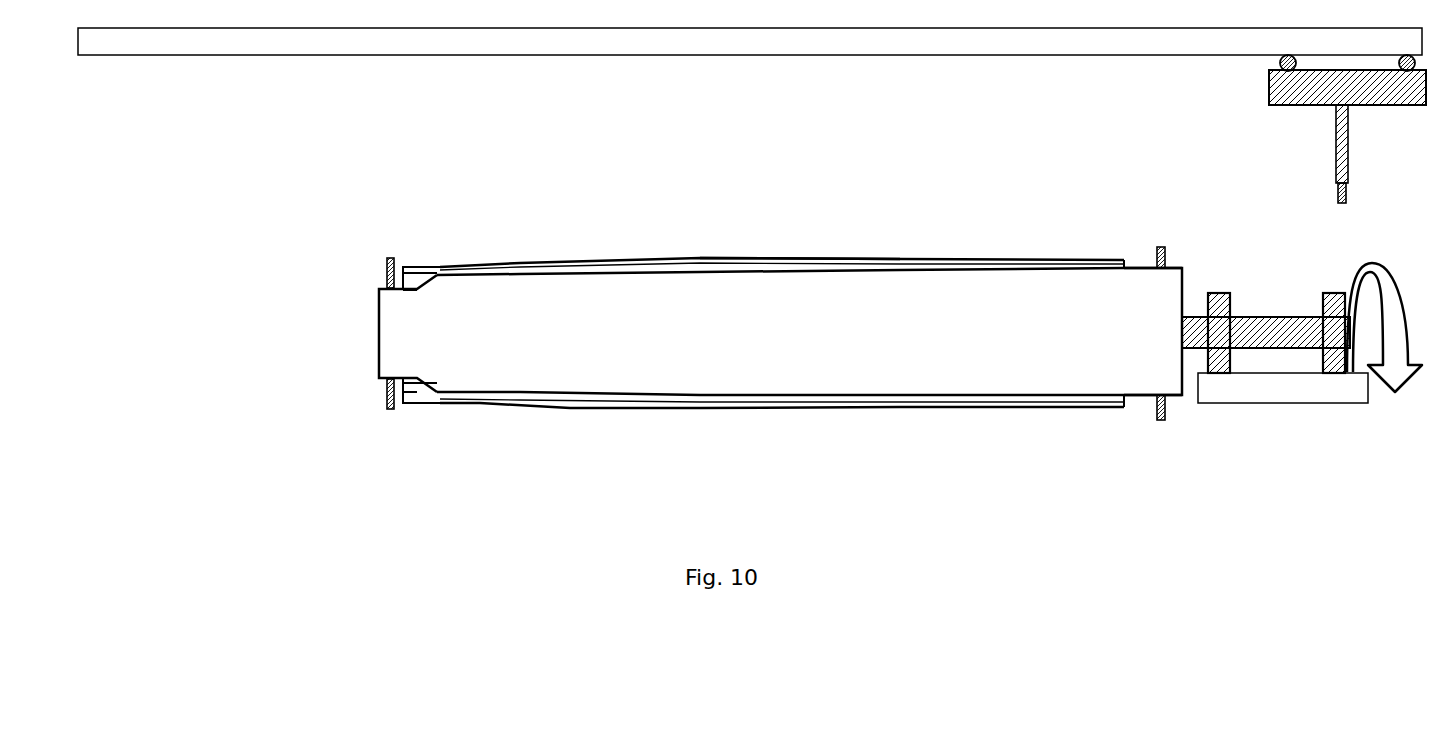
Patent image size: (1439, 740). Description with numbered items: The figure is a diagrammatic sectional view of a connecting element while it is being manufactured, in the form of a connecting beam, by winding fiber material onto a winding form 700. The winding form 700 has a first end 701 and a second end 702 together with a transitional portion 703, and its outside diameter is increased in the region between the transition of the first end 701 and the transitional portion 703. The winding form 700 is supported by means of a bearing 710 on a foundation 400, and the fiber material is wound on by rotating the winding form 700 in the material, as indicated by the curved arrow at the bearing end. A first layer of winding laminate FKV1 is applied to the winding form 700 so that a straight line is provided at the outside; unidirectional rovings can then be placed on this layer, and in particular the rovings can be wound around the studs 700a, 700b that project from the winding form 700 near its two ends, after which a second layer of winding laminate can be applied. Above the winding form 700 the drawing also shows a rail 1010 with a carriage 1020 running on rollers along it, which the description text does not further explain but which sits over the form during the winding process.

The guide rail 1010 is at (938, 38).
The carriage with rollers 1020 is at (1423, 104).
The winding form 700 is at (600, 338).
The stud 700a is at (385, 275).
The stud 700b is at (1158, 247).
The first end 701 is at (378, 327).
The second end 702 is at (1179, 365).
The transitional portion 703 is at (413, 285).
The bearing 710 is at (1337, 293).
The foundation 400 is at (1335, 393).
The first layer of winding laminate FKV1 is at (740, 258).